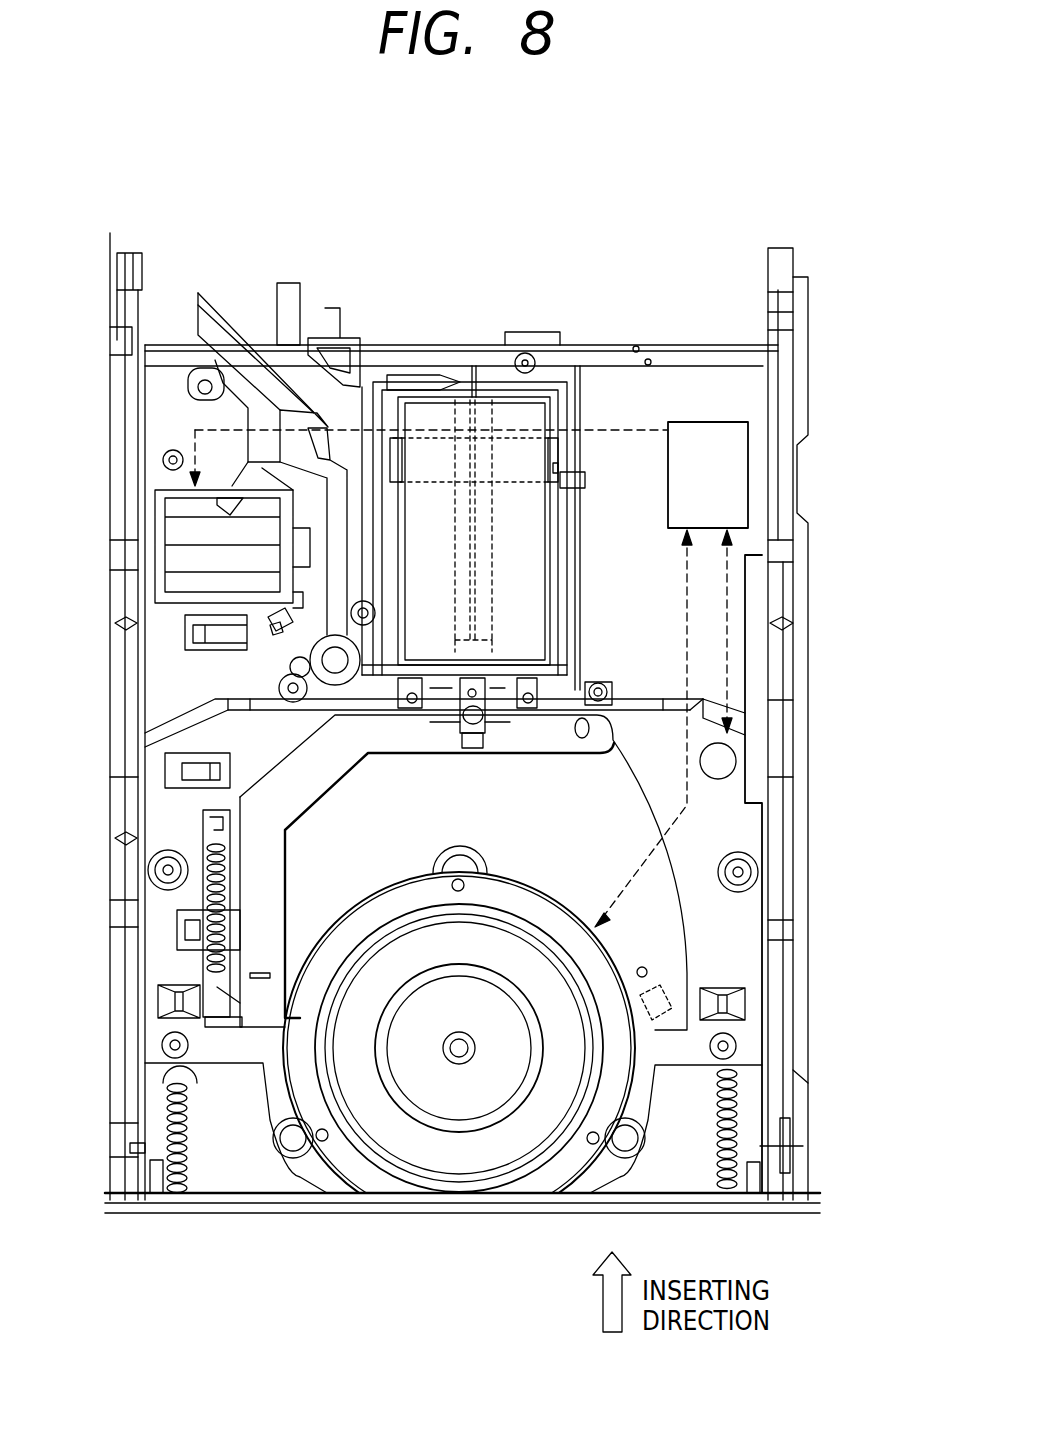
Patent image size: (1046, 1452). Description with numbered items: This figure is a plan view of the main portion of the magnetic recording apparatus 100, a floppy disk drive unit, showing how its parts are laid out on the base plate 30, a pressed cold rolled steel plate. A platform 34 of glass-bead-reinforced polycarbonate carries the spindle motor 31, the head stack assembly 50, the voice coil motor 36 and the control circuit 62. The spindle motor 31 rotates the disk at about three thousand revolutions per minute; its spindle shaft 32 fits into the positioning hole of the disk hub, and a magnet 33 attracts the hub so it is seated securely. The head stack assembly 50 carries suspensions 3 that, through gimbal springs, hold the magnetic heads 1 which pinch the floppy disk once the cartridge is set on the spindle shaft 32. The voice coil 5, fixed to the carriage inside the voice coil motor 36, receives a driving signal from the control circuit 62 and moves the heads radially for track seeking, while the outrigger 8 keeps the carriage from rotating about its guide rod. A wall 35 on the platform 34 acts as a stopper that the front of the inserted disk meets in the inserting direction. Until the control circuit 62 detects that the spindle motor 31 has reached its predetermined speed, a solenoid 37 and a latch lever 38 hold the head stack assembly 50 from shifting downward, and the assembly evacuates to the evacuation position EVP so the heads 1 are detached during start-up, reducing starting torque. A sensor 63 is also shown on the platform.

The magnetic recording apparatus 100 is at (537, 245).
The latch lever 38 is at (370, 378).
The platform 34 is at (715, 392).
The solenoid 37 is at (178, 527).
The voice coil motor 36 is at (523, 588).
The voice coil 5 is at (508, 470).
The head stack assembly 50 is at (498, 611).
The outrigger 8 is at (583, 480).
The control circuit 62 is at (748, 472).
The base plate 30 is at (800, 522).
The wall 35 is at (230, 700).
The sensor 63 is at (730, 768).
The suspension 3 is at (462, 697).
The magnetic head 1 is at (474, 748).
The evacuation position EVP is at (492, 688).
The spindle motor 31 is at (447, 1100).
The magnet 33 is at (478, 985).
The spindle shaft 32 is at (462, 1048).